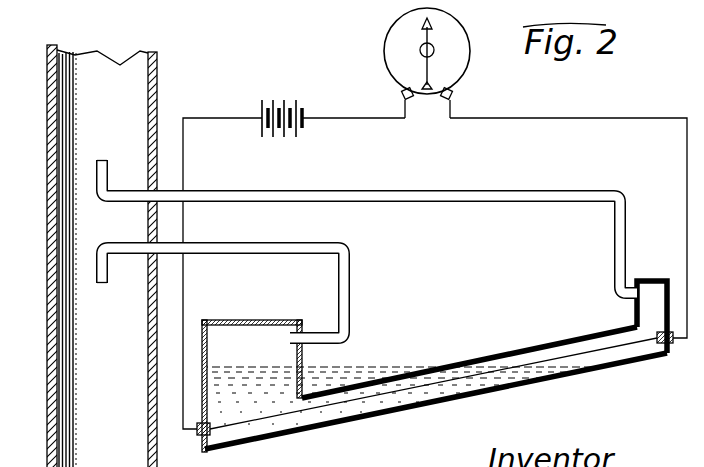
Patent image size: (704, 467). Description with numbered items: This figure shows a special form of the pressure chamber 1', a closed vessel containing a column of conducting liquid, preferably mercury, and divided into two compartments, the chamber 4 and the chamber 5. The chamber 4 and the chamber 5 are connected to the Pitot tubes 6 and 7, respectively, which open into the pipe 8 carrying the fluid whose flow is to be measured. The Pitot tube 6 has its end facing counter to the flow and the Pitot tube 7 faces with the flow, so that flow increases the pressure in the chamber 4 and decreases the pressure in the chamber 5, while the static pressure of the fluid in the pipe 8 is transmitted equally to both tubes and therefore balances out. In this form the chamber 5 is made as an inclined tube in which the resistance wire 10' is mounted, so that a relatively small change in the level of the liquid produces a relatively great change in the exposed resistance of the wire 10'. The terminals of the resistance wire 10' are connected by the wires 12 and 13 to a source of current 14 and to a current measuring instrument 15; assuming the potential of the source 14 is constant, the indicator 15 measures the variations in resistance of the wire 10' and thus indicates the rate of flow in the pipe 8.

The pressure chamber 1' is at (435, 383).
The chamber 4 is at (257, 337).
The chamber 5 is at (597, 345).
The Pitot tube 6 is at (100, 268).
The Pitot tube 7 is at (100, 174).
The pipe 8 is at (88, 322).
The resistance wire 10' is at (405, 380).
The wire 12 is at (687, 135).
The wire 13 is at (183, 223).
The source of current 14 is at (317, 78).
The current measuring instrument 15 is at (458, 58).